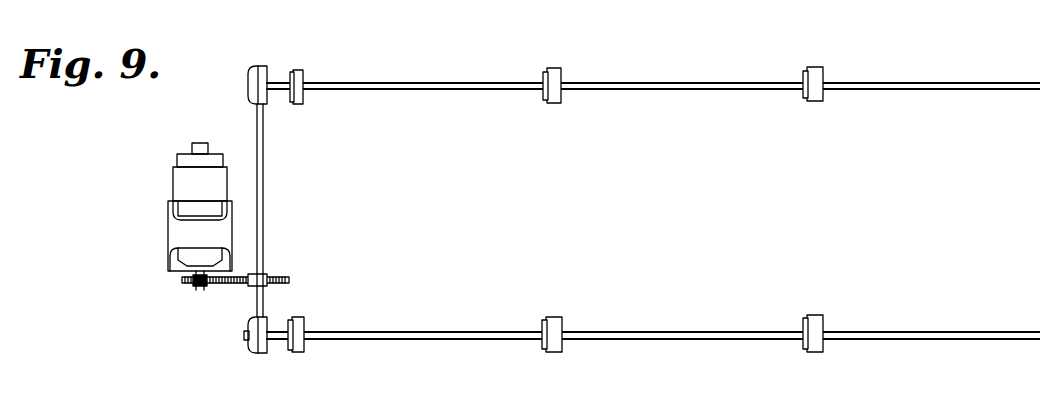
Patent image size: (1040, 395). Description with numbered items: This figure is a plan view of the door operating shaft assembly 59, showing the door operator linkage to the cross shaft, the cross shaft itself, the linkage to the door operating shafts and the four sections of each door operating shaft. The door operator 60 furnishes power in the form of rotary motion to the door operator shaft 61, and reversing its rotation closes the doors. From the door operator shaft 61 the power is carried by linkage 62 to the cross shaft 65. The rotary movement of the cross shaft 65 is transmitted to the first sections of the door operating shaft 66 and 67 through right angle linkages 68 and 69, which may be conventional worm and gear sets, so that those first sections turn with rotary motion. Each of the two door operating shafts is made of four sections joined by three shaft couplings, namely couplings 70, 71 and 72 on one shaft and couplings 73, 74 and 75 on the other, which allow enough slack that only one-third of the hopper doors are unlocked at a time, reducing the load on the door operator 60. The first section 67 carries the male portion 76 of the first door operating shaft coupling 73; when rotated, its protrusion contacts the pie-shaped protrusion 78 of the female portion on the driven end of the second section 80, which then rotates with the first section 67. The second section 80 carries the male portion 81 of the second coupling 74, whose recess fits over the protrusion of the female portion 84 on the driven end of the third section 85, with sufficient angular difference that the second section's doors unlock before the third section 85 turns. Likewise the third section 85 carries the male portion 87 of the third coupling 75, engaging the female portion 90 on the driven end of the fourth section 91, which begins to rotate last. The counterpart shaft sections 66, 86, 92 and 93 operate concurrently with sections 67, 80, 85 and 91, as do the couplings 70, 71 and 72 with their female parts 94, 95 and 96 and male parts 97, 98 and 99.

The door operating shaft assembly 59 is at (468, 211).
The door operator 60 is at (172, 224).
The door operator shaft 61 is at (198, 286).
The linkage 62 is at (234, 281).
The cross shaft 65 is at (266, 190).
The first section of door operating shaft 66 is at (278, 82).
The first section of door operating shaft 67 is at (278, 334).
The right angle linkage 68 is at (252, 72).
The right angle linkage 69 is at (250, 335).
The shaft coupling 70 is at (303, 95).
The shaft coupling 71 is at (556, 100).
The shaft coupling 72 is at (821, 100).
The first door operating shaft coupling 73 is at (304, 345).
The second door operating shaft coupling 74 is at (563, 320).
The third door operating shaft coupling 75 is at (822, 346).
The male portion 76 is at (291, 343).
The pie-shaped protrusion 78 is at (310, 328).
The second section of door operating shaft assembly 80 is at (465, 326).
The male portion 81 is at (544, 345).
The female portion 84 is at (565, 345).
The third section of door operating shaft assembly 85 is at (694, 327).
The door operating shaft section 86 is at (474, 84).
The male portion 87 is at (808, 343).
The female portion 90 is at (825, 318).
The fourth section of door operating shaft assembly 91 is at (918, 331).
The door operating shaft section 92 is at (684, 74).
The door operating shaft section 93 is at (962, 91).
The female part 94 is at (303, 78).
The female part 95 is at (562, 75).
The female part 96 is at (826, 74).
The male part 97 is at (282, 95).
The male part 98 is at (546, 96).
The male part 99 is at (808, 98).